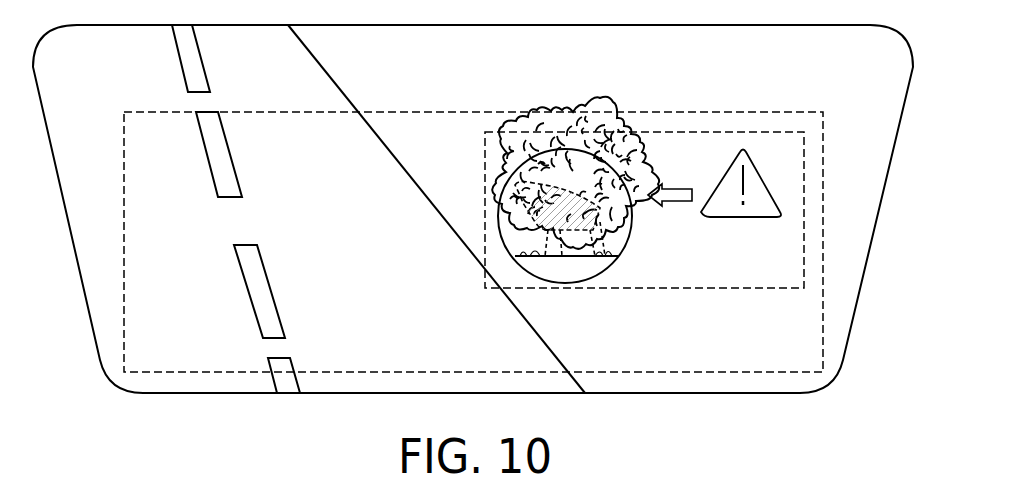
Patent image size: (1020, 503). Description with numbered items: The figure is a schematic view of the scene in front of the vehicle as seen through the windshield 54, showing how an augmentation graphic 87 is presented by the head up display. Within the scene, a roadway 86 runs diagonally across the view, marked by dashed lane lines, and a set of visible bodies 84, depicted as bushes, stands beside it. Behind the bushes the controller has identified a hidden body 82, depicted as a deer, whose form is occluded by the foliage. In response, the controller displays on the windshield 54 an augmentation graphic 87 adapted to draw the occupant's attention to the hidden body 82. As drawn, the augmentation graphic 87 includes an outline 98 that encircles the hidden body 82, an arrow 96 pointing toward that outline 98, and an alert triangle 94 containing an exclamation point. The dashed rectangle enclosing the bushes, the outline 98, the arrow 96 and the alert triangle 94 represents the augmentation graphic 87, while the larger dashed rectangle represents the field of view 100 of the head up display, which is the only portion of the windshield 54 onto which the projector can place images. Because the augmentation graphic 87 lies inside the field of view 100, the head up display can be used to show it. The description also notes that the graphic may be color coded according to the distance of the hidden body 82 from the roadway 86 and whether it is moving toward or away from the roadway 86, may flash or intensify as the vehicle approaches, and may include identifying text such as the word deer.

The windshield 54 is at (233, 393).
The roadway 86 is at (347, 203).
The field of view 100 is at (310, 112).
The augmentation graphic 87 is at (686, 131).
The outline 98 is at (528, 272).
The visible bodies 84 is at (527, 127).
The hidden body 82 is at (578, 257).
The arrow 96 is at (677, 204).
The alert triangle 94 is at (763, 180).